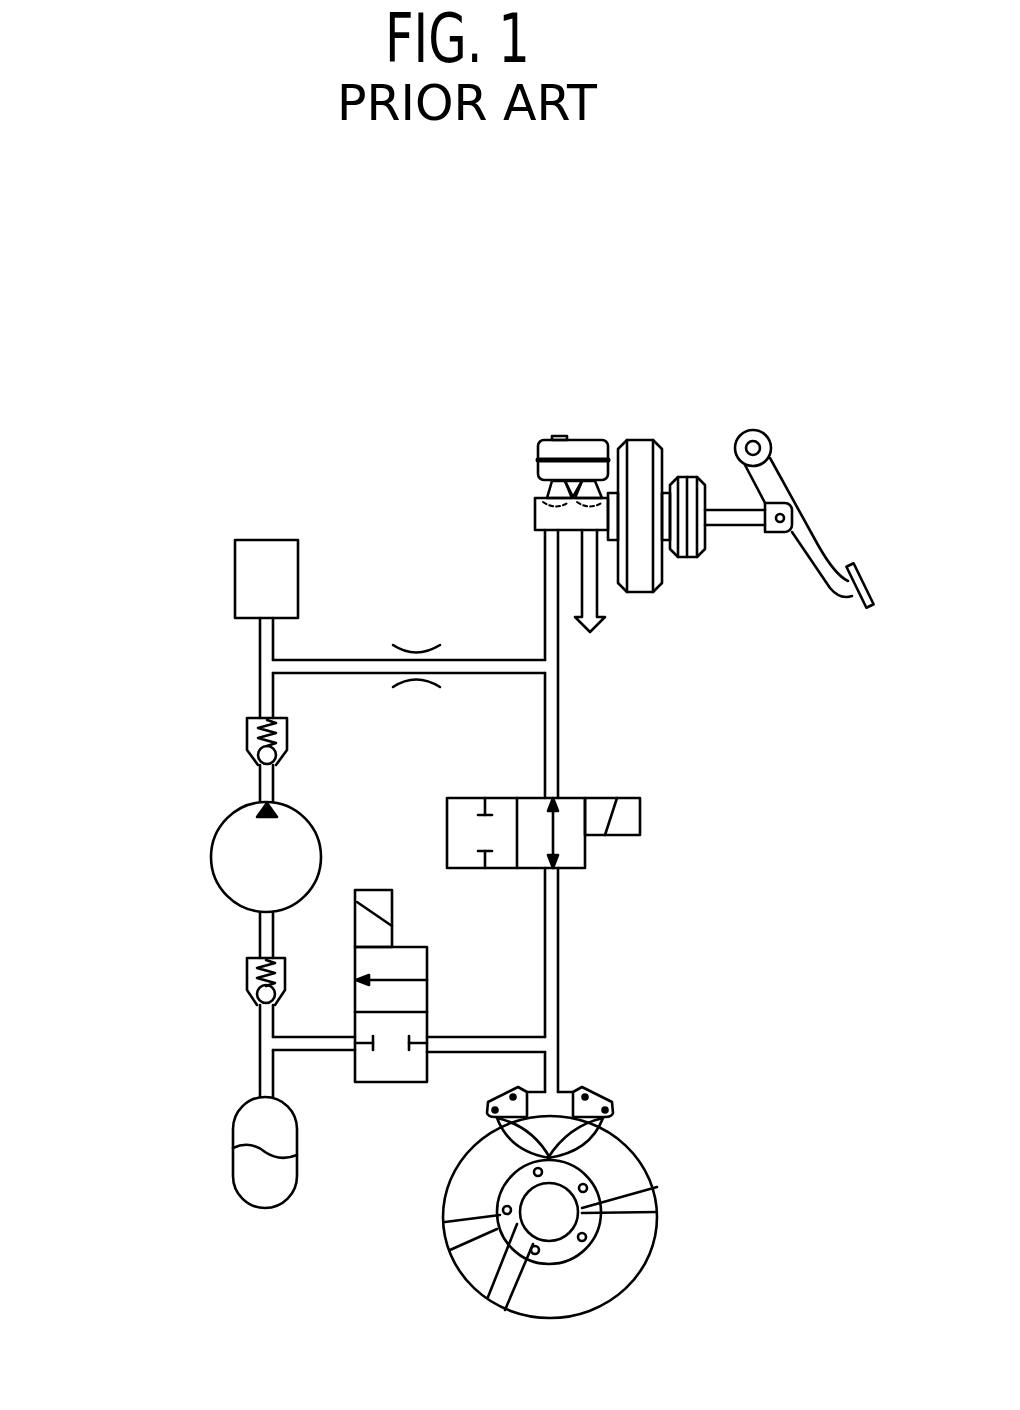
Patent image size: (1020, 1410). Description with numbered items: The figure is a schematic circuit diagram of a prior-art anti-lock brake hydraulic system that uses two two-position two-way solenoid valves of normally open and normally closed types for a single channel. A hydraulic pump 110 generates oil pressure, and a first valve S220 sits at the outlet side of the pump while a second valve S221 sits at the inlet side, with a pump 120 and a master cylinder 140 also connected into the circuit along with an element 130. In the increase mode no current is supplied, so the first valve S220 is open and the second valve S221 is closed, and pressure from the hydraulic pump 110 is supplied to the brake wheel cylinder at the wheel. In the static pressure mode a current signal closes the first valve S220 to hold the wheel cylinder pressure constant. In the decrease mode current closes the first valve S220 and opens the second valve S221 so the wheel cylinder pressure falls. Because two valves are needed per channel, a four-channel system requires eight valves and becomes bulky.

The hydraulic pump 110 is at (232, 1167).
The pump 120 is at (222, 823).
The reservoir 130 is at (277, 540).
The master cylinder 140 is at (620, 412).
The first 2/2 solenoid valve S220 is at (598, 837).
The second 2/2 solenoid valve S221 is at (390, 1083).